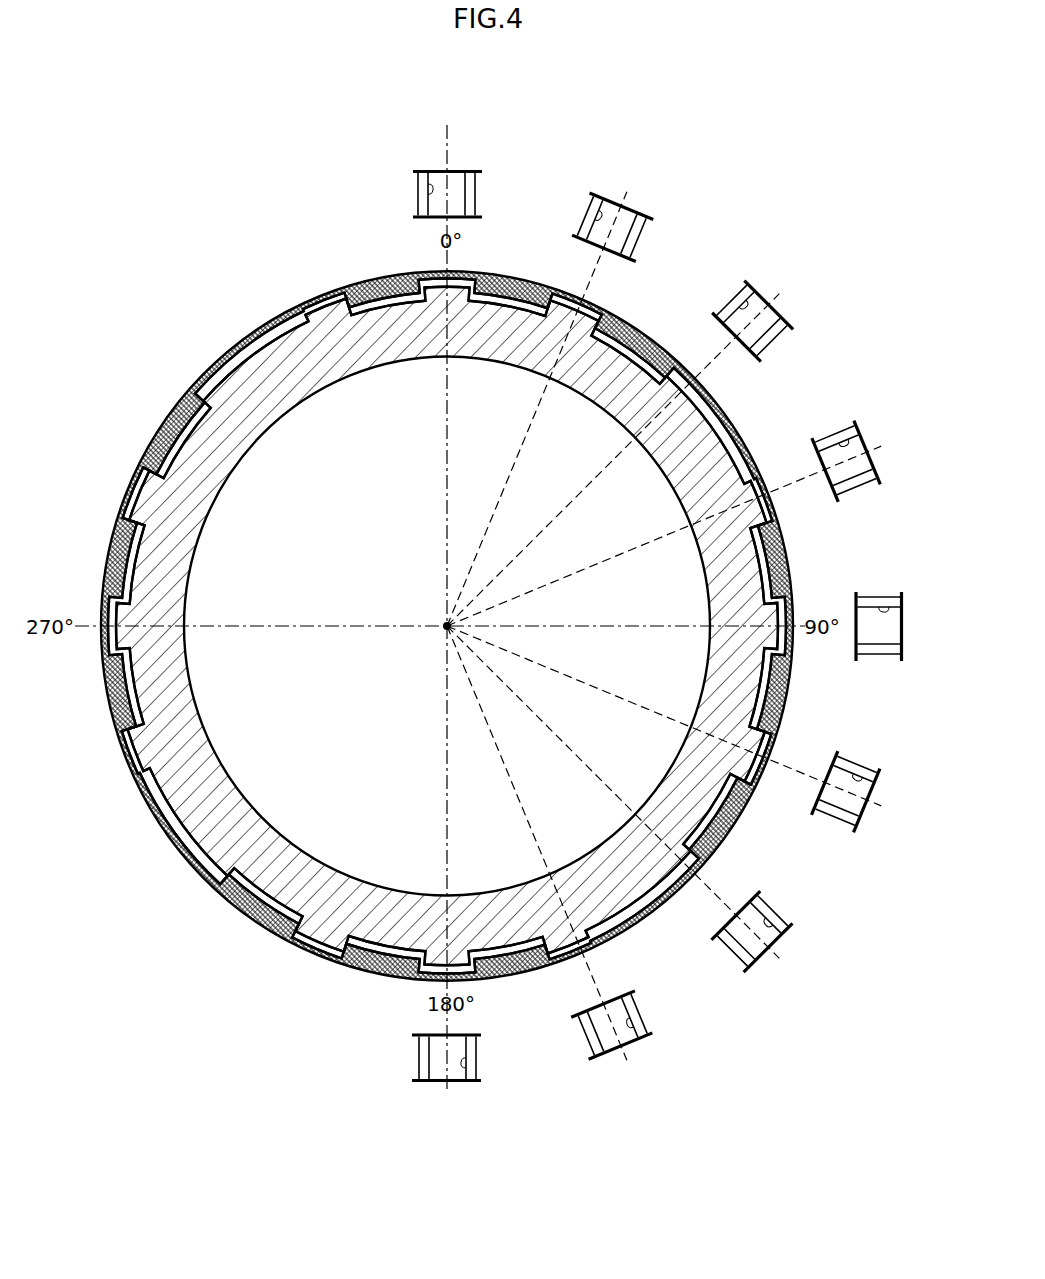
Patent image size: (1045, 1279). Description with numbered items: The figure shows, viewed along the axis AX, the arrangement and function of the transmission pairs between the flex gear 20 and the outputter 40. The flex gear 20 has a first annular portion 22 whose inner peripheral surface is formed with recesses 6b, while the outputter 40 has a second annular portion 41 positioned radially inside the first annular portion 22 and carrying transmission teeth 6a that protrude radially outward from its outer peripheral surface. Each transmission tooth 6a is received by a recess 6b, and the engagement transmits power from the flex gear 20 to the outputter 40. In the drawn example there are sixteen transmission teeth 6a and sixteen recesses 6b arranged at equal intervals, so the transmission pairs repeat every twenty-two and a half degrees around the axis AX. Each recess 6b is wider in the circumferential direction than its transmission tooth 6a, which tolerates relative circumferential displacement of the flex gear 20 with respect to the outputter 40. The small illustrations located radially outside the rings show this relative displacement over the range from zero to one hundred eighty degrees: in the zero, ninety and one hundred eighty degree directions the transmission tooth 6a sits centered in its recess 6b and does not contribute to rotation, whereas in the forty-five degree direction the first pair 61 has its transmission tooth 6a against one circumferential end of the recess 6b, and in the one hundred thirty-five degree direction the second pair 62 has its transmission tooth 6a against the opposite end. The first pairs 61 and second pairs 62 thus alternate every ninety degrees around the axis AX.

The flex gear 20 is at (447, 619).
The first annular portion 22 is at (447, 608).
The outputter 40 is at (447, 626).
The second annular portion 41 is at (447, 626).
The transmission tooth 6a is at (455, 178).
The recess 6b is at (432, 188).
The first pair 61 is at (792, 271).
The second pair 62 is at (798, 976).
The axis AX is at (442, 628).